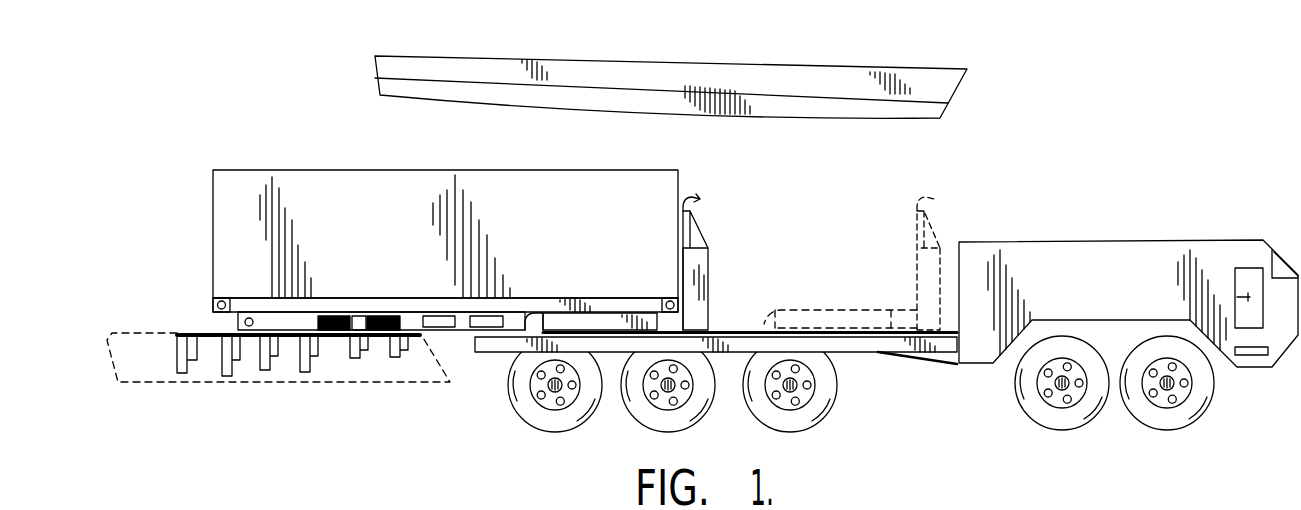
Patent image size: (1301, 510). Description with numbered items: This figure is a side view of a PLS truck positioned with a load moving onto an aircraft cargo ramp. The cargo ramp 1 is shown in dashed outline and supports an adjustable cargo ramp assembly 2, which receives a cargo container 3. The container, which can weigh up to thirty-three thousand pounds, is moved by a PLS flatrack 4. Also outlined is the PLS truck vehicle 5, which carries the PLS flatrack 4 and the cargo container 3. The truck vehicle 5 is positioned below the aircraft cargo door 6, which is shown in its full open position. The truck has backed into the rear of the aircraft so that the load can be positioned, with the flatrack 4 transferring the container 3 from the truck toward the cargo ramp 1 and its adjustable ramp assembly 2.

The cargo ramp 1 is at (450, 381).
The adjustable cargo ramp assembly 2 is at (335, 338).
The cargo container 3 is at (282, 170).
The PLS flatrack 4 is at (708, 278).
The PLS truck vehicle 5 is at (1118, 240).
The aircraft cargo door 6 is at (718, 58).